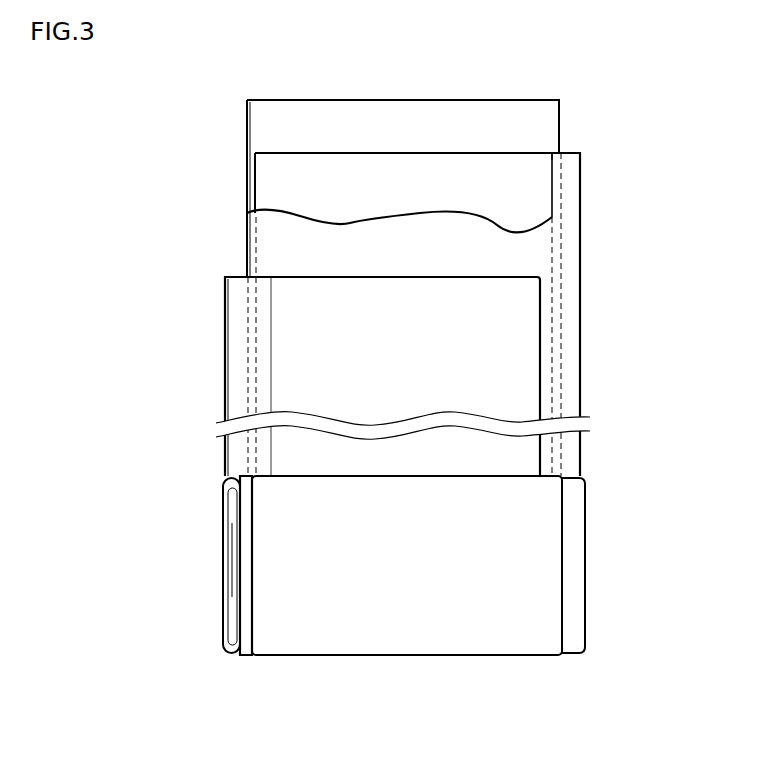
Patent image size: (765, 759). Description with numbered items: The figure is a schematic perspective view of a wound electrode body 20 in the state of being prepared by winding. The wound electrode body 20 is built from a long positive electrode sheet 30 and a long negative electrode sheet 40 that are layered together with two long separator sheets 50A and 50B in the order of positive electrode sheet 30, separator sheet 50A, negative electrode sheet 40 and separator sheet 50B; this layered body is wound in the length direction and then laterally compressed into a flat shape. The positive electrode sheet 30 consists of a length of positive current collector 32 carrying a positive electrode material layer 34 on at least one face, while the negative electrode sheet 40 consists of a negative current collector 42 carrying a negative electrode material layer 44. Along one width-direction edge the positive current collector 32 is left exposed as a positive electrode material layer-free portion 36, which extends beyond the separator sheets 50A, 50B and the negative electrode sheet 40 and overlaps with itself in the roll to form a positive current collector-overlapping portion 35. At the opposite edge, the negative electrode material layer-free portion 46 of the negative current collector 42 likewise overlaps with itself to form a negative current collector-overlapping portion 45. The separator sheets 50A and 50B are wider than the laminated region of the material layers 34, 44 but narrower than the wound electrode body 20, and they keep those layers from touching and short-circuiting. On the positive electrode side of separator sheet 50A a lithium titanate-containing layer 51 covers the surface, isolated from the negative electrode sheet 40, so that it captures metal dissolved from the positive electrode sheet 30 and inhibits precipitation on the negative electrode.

The wound electrode body 20 is at (402, 600).
The positive electrode sheet 30 is at (317, 376).
The positive current collector 32 is at (317, 376).
The positive electrode material layer 34 is at (282, 390).
The positive current collector-overlapping portion 35 is at (230, 537).
The positive electrode material layer-free portion 36 is at (225, 298).
The negative electrode sheet 40 is at (481, 312).
The negative current collector 42 is at (481, 312).
The negative electrode material layer 44 is at (548, 178).
The negative current collector-overlapping portion 45 is at (572, 545).
The negative electrode material layer-free portion 46 is at (565, 287).
The separator sheet 50A is at (277, 242).
The separator sheet 50B is at (267, 122).
The lithium titanate-containing layer 51 is at (364, 288).